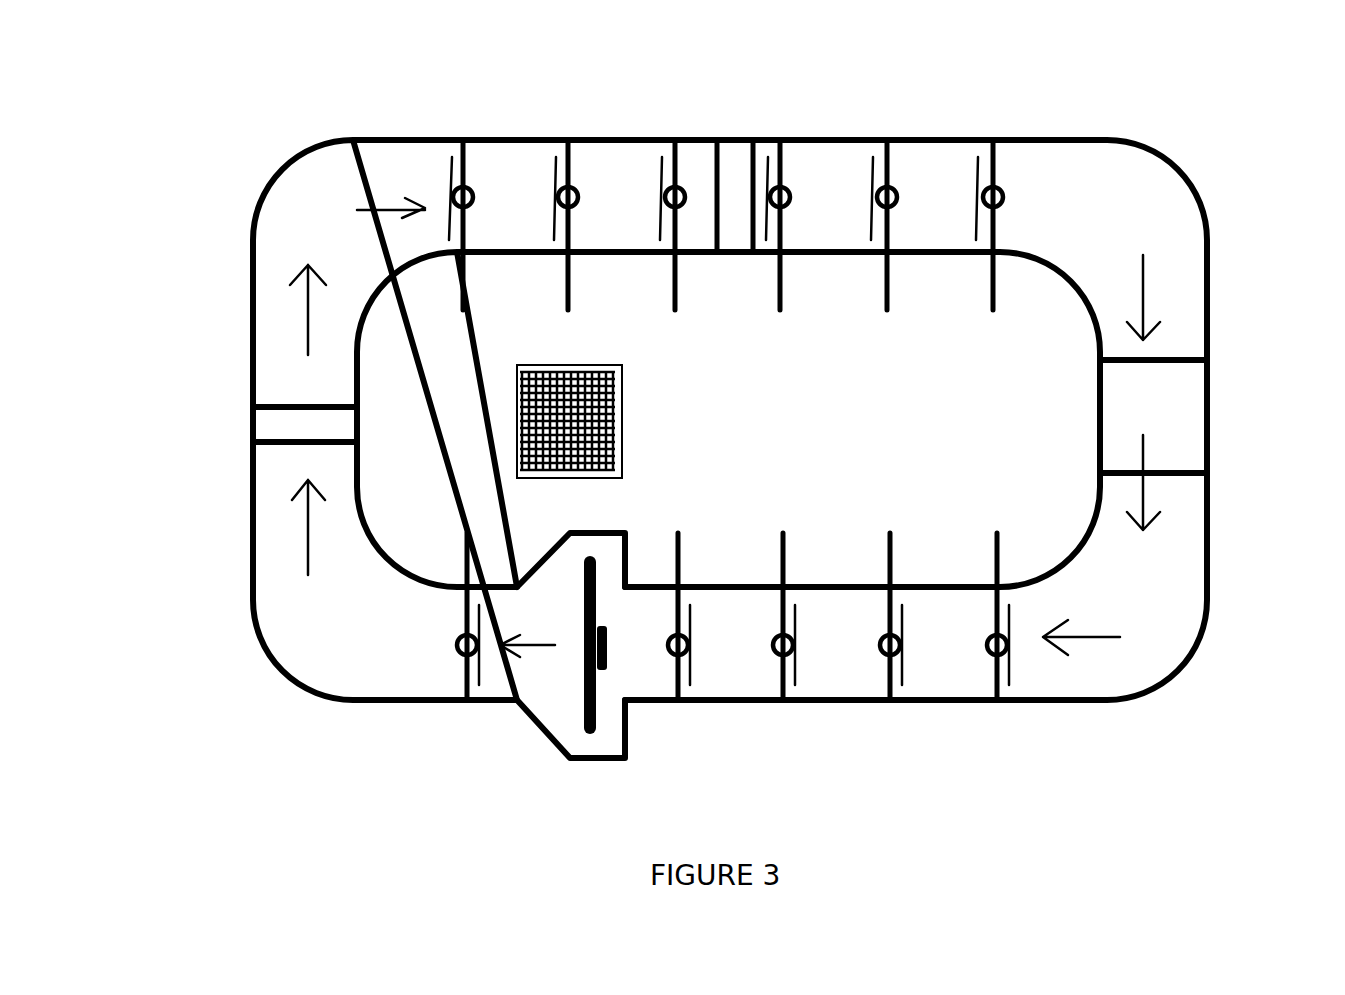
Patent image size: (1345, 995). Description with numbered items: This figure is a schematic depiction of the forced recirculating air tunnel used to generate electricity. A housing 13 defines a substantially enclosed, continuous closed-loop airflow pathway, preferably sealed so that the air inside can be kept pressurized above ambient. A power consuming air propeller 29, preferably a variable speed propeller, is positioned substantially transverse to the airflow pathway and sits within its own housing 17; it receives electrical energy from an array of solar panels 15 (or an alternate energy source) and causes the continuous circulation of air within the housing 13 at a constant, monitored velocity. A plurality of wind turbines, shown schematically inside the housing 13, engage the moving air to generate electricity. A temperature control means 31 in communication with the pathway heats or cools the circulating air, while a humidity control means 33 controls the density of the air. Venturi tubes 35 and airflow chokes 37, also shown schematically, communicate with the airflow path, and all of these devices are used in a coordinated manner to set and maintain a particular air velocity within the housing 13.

The housing 13 is at (335, 205).
The array of solar panels 15 is at (607, 412).
The housing for power consuming air propeller 17 is at (628, 748).
The power consuming air propeller 29 is at (585, 670).
The temperature control means 31 is at (1207, 357).
The humidity control means 33 is at (1207, 473).
The venturi tubes 35 is at (265, 425).
The airflow chokes 37 is at (733, 150).